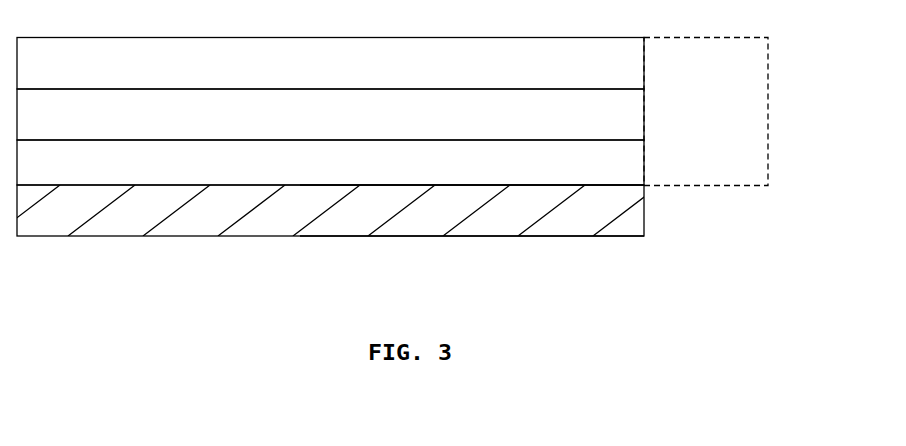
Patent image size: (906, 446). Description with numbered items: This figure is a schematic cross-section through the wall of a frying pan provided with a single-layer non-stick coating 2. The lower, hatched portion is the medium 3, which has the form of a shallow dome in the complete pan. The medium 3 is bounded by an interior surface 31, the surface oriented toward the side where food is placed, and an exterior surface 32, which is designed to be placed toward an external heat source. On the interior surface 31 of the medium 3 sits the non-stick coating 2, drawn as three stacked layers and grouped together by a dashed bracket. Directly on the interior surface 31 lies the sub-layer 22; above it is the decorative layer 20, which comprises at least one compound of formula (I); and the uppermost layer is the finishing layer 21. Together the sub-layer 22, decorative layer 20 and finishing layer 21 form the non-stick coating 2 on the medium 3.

The non-stick coating 2 is at (725, 112).
The decorative layer 20 is at (635, 117).
The finishing layer 21 is at (630, 67).
The sub-layer 22 is at (633, 164).
The medium 3 is at (633, 223).
The interior surface 31 is at (467, 186).
The exterior surface 32 is at (528, 235).